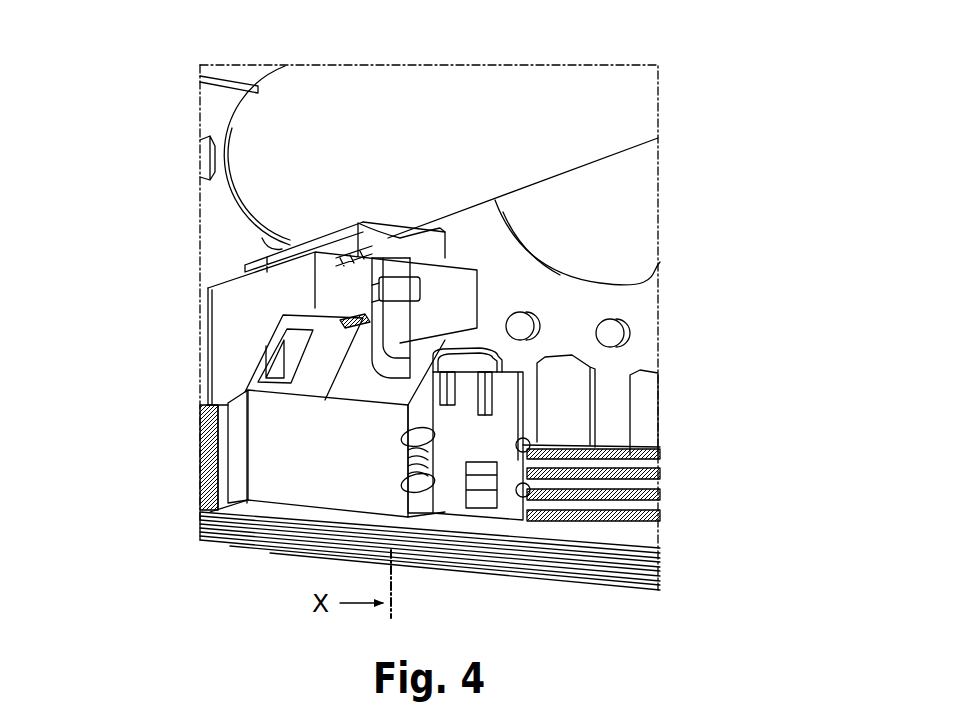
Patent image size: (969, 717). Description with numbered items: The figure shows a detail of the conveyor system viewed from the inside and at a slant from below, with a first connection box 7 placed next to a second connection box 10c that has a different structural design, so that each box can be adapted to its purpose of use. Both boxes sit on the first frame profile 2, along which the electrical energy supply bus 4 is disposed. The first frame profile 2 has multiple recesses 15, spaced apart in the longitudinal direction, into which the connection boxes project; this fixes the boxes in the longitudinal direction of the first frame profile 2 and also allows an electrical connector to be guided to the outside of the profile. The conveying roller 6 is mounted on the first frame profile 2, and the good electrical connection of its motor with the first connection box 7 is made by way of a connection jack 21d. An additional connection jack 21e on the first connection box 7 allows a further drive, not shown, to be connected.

The first frame profile 2 is at (210, 113).
The electrical energy supply bus 4 is at (190, 453).
The conveying roller 6 is at (278, 93).
The first connection box 7 is at (320, 487).
The second connection box 10c is at (465, 528).
The recesses 15 is at (568, 417).
The connection jack 21d is at (363, 318).
The additional connection jack 21e is at (272, 370).